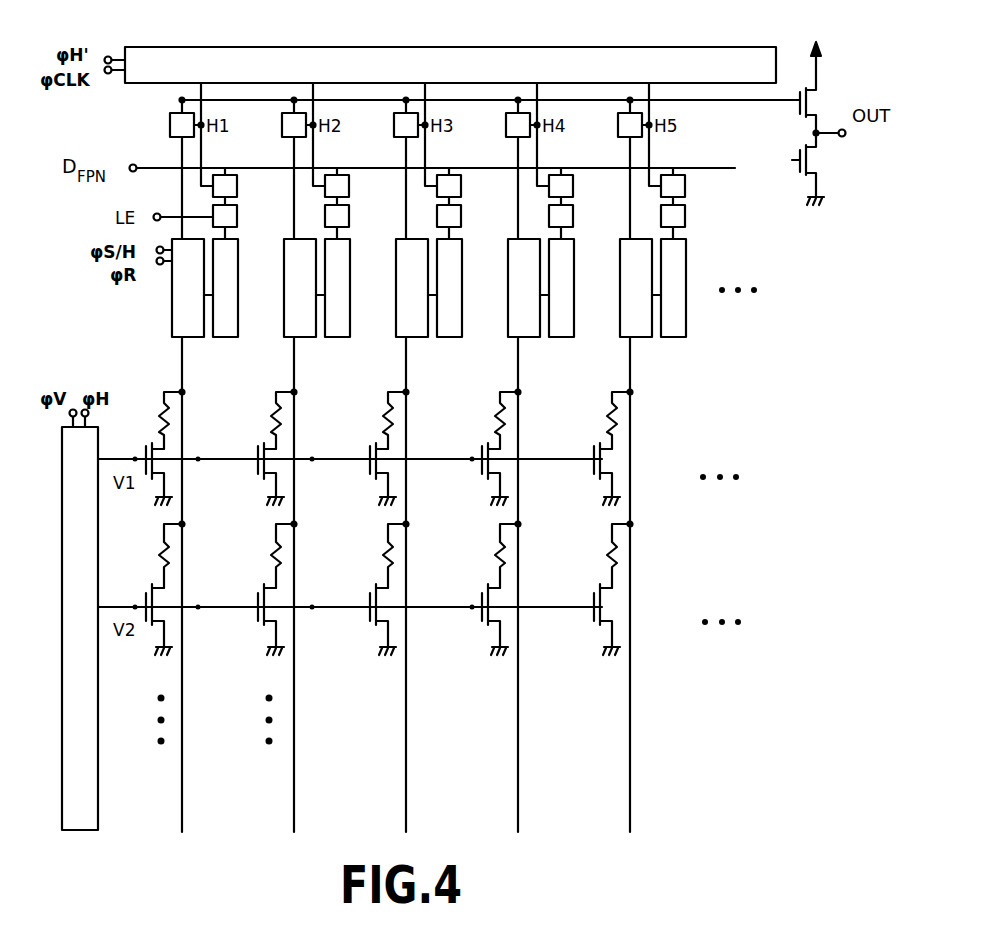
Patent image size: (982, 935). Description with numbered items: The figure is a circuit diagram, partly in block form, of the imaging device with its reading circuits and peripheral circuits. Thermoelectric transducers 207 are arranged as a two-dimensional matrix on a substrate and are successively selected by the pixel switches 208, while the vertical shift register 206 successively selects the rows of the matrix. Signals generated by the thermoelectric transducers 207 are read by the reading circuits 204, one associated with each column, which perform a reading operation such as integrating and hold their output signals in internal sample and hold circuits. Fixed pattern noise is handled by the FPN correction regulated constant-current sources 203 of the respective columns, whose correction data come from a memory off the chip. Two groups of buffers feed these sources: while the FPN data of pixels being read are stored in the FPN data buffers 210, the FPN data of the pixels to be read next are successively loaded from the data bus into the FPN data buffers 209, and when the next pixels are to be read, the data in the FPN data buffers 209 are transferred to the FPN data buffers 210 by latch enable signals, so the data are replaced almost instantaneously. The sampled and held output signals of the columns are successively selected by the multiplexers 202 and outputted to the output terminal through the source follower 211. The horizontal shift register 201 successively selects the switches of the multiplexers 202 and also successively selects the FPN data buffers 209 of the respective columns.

The horizontal shift register 201 is at (190, 46).
The multiplexer 202 is at (168, 125).
The FPN correction regulated constant-current source 203 is at (687, 270).
The reading circuit 204 is at (170, 313).
The vertical shift register 206 is at (622, 457).
The thermoelectric transducer 207 is at (627, 413).
The pixel switch 208 is at (99, 808).
The FPN data buffer 209 is at (686, 186).
The FPN data buffer 210 is at (686, 215).
The source follower 211 is at (831, 123).